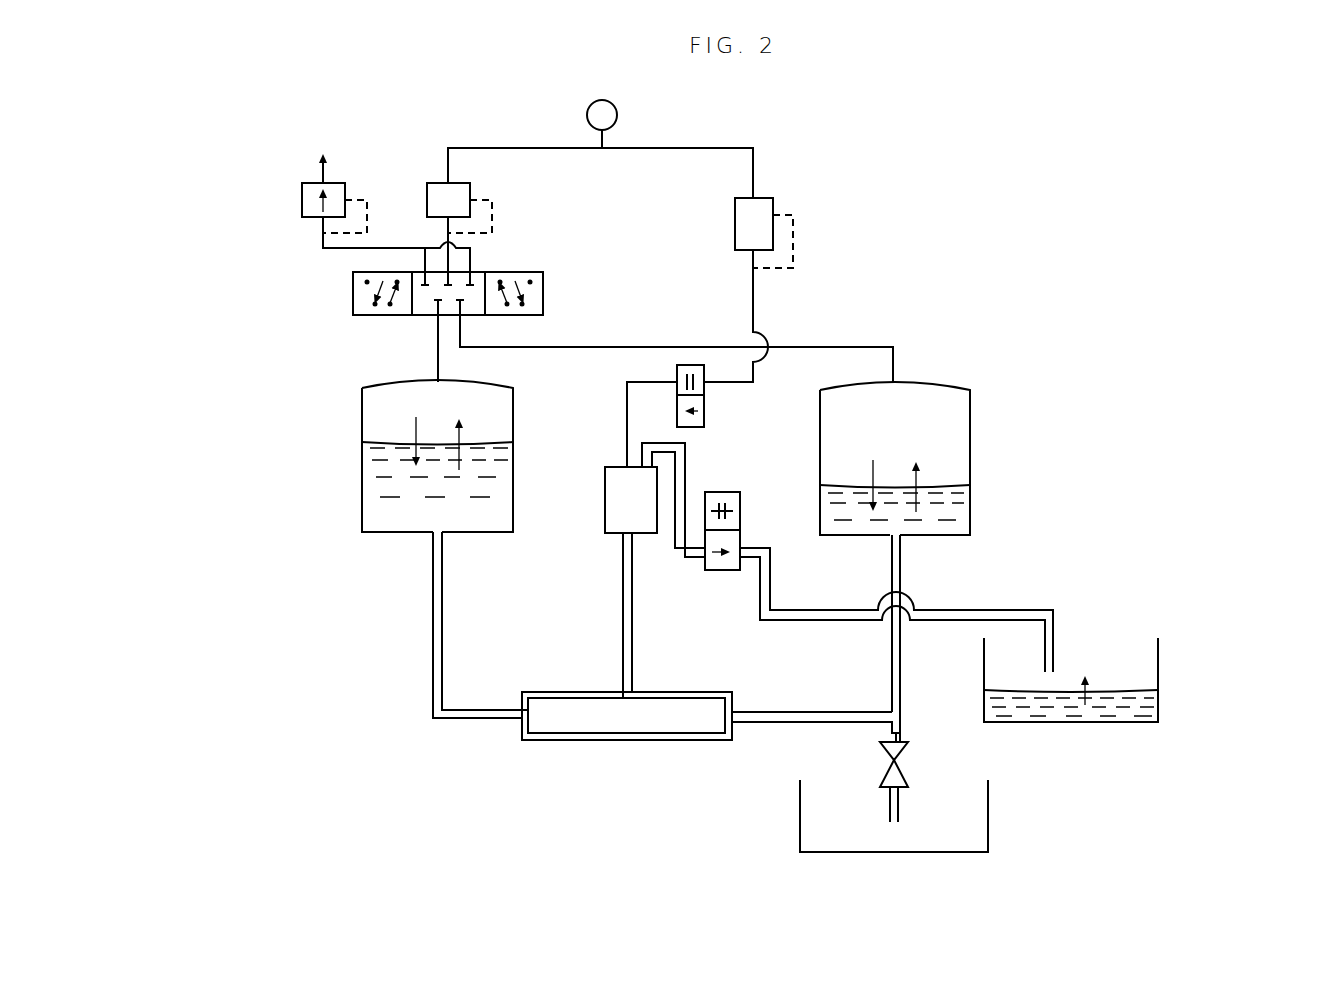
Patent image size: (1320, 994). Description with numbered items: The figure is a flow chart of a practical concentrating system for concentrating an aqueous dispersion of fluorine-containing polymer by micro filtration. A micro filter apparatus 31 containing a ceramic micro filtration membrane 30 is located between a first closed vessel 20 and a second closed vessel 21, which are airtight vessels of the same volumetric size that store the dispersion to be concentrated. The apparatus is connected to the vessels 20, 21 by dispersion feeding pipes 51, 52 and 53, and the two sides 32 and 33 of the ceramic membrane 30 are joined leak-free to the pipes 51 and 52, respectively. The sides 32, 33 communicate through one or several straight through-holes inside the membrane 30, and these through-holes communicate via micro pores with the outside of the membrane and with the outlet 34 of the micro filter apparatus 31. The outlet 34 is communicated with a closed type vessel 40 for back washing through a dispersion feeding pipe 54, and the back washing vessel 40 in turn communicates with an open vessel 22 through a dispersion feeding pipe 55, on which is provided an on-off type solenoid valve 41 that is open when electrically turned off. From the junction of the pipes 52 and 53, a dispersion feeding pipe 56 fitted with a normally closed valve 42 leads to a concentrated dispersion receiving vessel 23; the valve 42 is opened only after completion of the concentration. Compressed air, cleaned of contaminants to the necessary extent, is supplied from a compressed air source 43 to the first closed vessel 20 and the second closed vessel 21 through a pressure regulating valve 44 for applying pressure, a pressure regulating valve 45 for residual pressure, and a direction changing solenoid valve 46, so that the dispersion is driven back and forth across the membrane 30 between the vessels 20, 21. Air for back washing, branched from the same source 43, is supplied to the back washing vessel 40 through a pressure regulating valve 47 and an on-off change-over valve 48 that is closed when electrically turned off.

The first closed vessel 20 is at (362, 415).
The second closed vessel 21 is at (970, 427).
The open vessel 22 is at (1160, 663).
The concentrated dispersion receiving vessel 23 is at (988, 808).
The micro filtration membrane 30 is at (580, 747).
The micro filter apparatus 31 is at (628, 737).
The side of the micro filtration membrane 32 is at (517, 720).
The side of the micro filtration membrane 33 is at (717, 720).
The outlet 34 is at (625, 680).
The closed type vessel for back washing 40 is at (612, 487).
The on-off type solenoid valve 41 is at (722, 492).
The valve 42 is at (898, 753).
The compressed air source 43 is at (617, 115).
The pressure regulating valve for applying pressure 44 is at (440, 197).
The pressure regulating valve for residual pressure 45 is at (306, 197).
The direction changing solenoid valve 46 is at (543, 292).
The pressure regulating valve 47 is at (770, 210).
The on-off change-over valve 48 is at (700, 420).
The dispersion feeding pipe 51 is at (436, 632).
The dispersion feeding pipe 52 is at (826, 717).
The dispersion feeding pipe 53 is at (893, 678).
The dispersion feeding pipe 54 is at (626, 585).
The dispersion feeding pipe 55 is at (808, 618).
The dispersion feeding pipe 56 is at (893, 733).